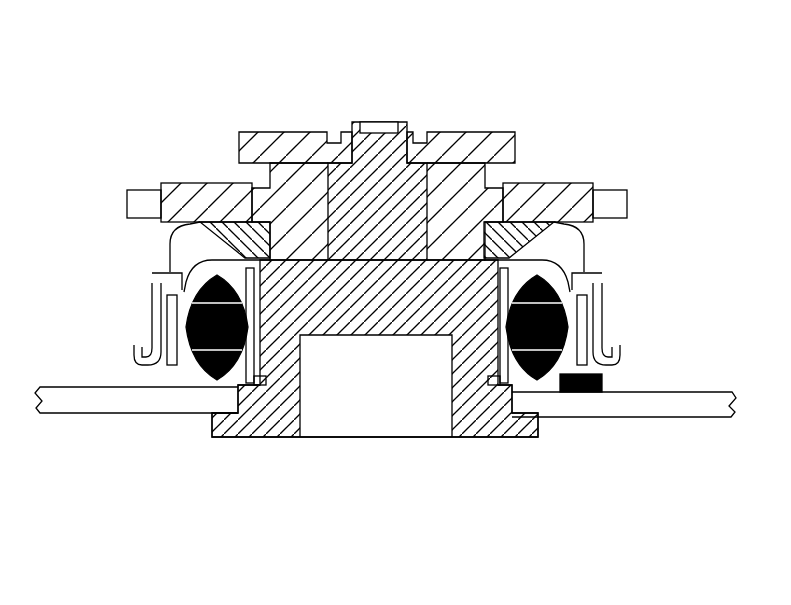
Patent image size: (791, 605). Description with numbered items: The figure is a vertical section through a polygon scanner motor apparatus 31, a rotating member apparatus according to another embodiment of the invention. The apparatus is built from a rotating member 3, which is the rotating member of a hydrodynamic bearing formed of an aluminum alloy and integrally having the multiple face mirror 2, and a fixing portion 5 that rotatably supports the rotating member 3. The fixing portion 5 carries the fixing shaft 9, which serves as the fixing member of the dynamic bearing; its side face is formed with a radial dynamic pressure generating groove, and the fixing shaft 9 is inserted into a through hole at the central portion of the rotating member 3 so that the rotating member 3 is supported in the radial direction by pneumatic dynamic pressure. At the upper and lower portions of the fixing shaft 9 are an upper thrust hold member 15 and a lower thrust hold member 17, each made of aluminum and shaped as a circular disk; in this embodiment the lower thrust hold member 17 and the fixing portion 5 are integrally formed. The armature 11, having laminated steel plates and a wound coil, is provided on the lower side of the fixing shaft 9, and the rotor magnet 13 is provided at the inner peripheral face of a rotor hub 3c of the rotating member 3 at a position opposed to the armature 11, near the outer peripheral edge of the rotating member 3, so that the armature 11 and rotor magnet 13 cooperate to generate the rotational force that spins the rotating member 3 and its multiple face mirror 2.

The polygon scanner motor apparatus 31 is at (168, 114).
The upper thrust hold member 15 is at (488, 148).
The fixing shaft 9 is at (432, 160).
The rotating member 3 is at (575, 197).
The multiple face mirror 2 is at (628, 216).
The rotor hub 3c is at (158, 278).
The rotor magnet 13 is at (172, 368).
The armature 11 is at (207, 367).
The lower thrust hold member 17 is at (447, 285).
The fixing portion 5 is at (238, 437).